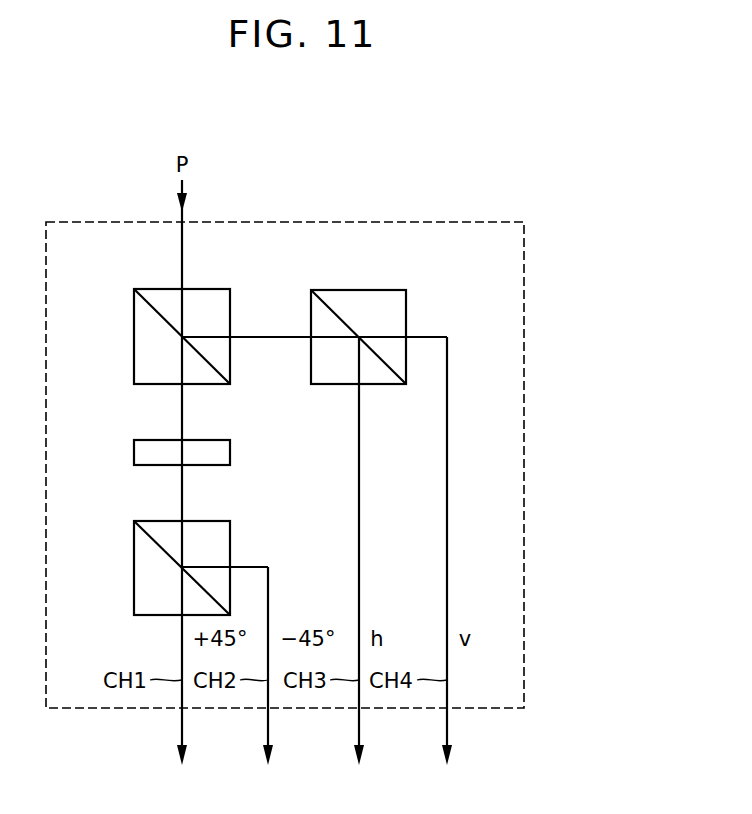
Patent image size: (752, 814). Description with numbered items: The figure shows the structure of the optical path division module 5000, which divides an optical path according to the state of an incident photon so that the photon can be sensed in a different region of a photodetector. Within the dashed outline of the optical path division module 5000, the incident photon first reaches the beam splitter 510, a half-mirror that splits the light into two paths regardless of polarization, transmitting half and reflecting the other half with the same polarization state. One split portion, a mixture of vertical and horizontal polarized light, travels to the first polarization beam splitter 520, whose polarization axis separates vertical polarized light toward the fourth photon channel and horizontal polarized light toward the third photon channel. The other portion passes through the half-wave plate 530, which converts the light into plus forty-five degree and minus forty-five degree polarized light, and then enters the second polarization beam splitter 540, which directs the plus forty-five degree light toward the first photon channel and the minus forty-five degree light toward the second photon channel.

The optical path division module 5000 is at (553, 205).
The beam splitter 510 is at (134, 337).
The first polarization beam splitter 520 is at (358, 290).
The half-wave plate 530 is at (134, 453).
The second polarization beam splitter 540 is at (134, 567).